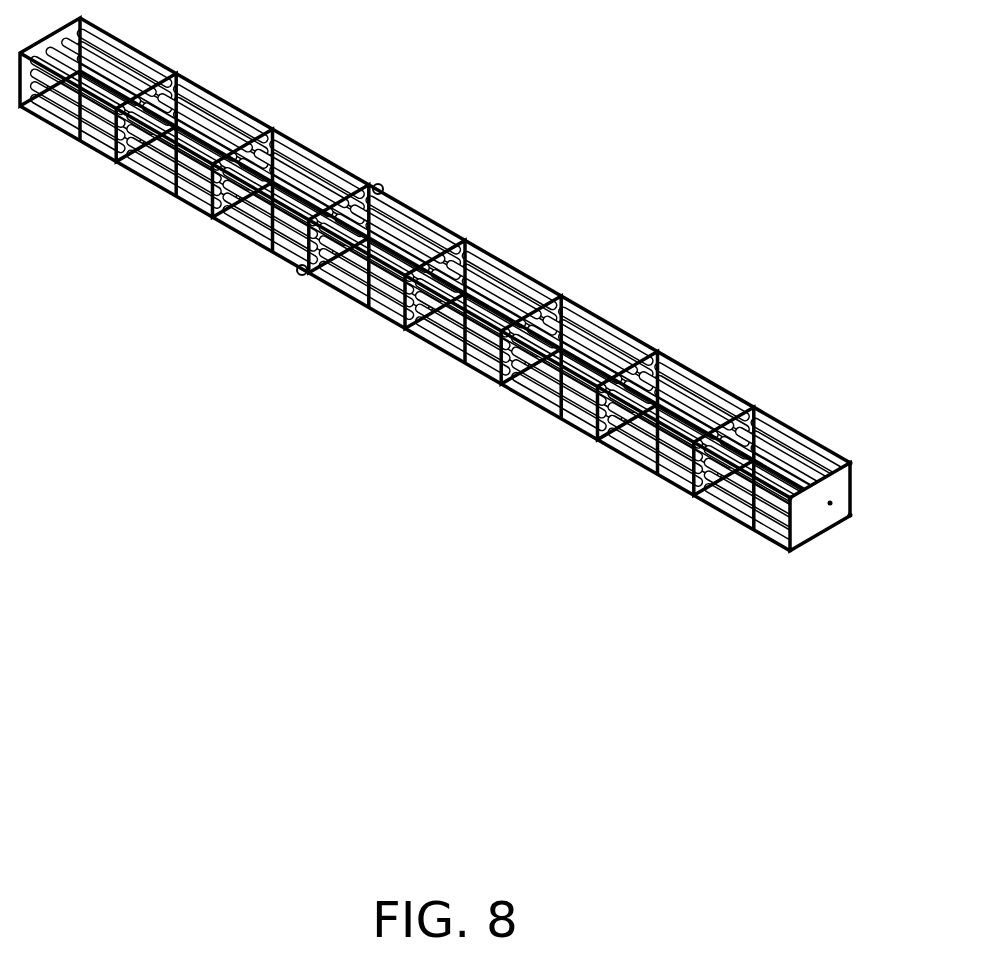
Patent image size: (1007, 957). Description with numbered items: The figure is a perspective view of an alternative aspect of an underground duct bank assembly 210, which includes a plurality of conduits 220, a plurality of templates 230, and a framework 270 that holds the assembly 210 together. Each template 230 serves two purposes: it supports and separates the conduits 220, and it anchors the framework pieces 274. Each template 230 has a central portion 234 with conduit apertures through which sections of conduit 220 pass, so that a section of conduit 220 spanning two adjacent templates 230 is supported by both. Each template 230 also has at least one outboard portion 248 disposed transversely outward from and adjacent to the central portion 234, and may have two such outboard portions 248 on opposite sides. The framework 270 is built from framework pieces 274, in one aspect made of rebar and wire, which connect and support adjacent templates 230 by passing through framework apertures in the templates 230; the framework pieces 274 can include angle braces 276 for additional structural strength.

The underground duct bank assembly 210 is at (446, 285).
The conduit 220 is at (446, 285).
The template 230 is at (475, 275).
The central portion 234 is at (465, 240).
The outboard portion 248 is at (334, 232).
The framework 270 is at (463, 253).
The framework piece 274 is at (439, 286).
The angle brace 276 is at (405, 328).